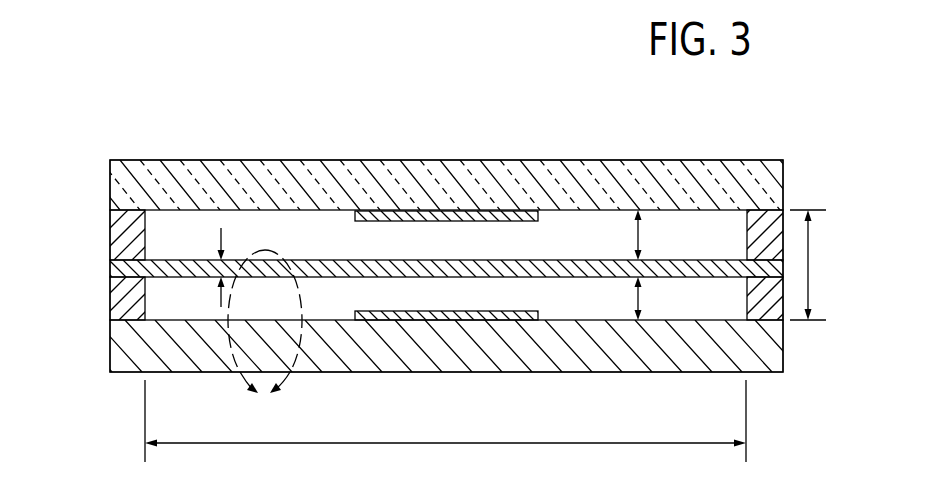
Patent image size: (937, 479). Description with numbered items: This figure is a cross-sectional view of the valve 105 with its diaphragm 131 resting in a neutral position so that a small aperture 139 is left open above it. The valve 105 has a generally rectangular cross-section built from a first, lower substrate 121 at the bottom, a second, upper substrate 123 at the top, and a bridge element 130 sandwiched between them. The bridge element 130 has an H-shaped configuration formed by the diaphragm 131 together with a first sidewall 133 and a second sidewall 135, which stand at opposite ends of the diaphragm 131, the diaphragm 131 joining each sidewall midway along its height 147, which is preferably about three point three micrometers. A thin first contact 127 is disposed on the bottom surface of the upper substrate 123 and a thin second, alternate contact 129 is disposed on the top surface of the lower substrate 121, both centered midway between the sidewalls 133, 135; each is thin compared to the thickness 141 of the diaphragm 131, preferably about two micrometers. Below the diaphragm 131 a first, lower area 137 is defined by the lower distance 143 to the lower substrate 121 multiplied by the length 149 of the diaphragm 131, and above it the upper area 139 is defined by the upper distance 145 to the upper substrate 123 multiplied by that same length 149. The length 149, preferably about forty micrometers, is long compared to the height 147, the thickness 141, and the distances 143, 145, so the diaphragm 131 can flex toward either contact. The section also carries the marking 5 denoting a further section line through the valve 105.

The valve 105 is at (355, 120).
The first, lower substrate 121 is at (110, 333).
The second, upper substrate 123 is at (110, 186).
The first contact 127 is at (408, 222).
The second, alternate contact 129 is at (402, 311).
The bridge element 130 is at (98, 297).
The diaphragm 131 is at (535, 262).
The first sidewall 133 is at (110, 236).
The second sidewall 135 is at (747, 233).
The first, lower area 137 is at (711, 309).
The first, upper area 139 is at (186, 226).
The thickness of the diaphragm 141 is at (221, 295).
The first, lower distance 143 is at (636, 297).
The first, upper distance 145 is at (636, 237).
The height of the sidewalls 147 is at (810, 268).
The length of the diaphragm 149 is at (315, 443).
The section line 5- 5 is at (265, 331).